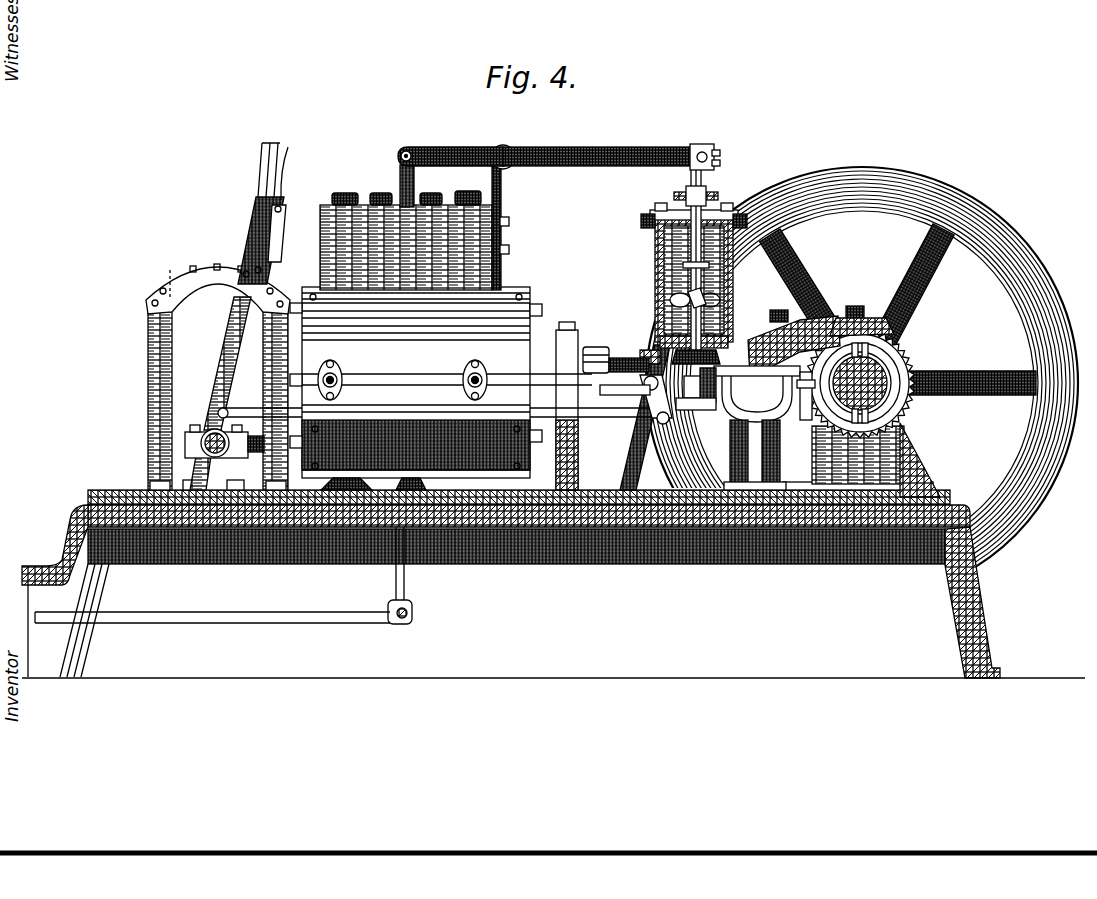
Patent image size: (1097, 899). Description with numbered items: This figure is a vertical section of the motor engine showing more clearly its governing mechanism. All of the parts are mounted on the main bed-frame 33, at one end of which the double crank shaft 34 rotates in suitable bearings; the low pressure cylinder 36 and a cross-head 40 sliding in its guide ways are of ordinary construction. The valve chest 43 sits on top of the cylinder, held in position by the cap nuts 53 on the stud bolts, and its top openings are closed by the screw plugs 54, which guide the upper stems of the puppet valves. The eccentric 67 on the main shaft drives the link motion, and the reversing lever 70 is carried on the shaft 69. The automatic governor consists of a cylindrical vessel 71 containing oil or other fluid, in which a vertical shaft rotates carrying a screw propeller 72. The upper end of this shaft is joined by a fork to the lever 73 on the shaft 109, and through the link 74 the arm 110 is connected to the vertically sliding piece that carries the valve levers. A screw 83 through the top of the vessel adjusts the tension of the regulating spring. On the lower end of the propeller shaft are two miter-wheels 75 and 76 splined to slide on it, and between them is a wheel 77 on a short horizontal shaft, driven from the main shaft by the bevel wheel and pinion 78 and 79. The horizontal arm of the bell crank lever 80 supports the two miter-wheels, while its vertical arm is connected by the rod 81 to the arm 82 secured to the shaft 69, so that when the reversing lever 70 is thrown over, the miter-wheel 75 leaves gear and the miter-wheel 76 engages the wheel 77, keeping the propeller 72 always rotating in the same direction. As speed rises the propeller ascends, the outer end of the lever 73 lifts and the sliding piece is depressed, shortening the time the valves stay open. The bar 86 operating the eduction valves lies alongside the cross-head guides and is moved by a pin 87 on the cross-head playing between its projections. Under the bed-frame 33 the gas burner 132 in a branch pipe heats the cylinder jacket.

The main bed-frame 33 is at (553, 584).
The double crank shaft 34 is at (860, 436).
The low pressure cylinder 36 is at (416, 388).
The cross-head 40 is at (591, 356).
The valve chest 43 is at (406, 240).
The cap nuts 53 is at (342, 194).
The screw plugs 54 is at (380, 194).
The eccentric 67 is at (875, 312).
The shaft of the reversing lever 69 is at (200, 454).
The reversing lever 70 is at (250, 240).
The cylindrical vessel 71 is at (657, 255).
The screw propeller 72 is at (676, 298).
The lever 73 is at (582, 150).
The link 74 is at (398, 210).
The miter-wheel 75 is at (700, 412).
The miter-wheel 76 is at (676, 354).
The wheel 77 is at (732, 398).
The bevel wheel 78 is at (905, 407).
The pinion 79 is at (806, 419).
The bell crank lever 80 is at (660, 426).
The rod 81 is at (586, 420).
The arm 82 is at (212, 412).
The screw 83 is at (712, 198).
The bar 86 is at (406, 384).
The pin 87 is at (612, 360).
The shaft 109 is at (505, 148).
The arm 110 is at (449, 150).
The gas burner 132 is at (405, 570).